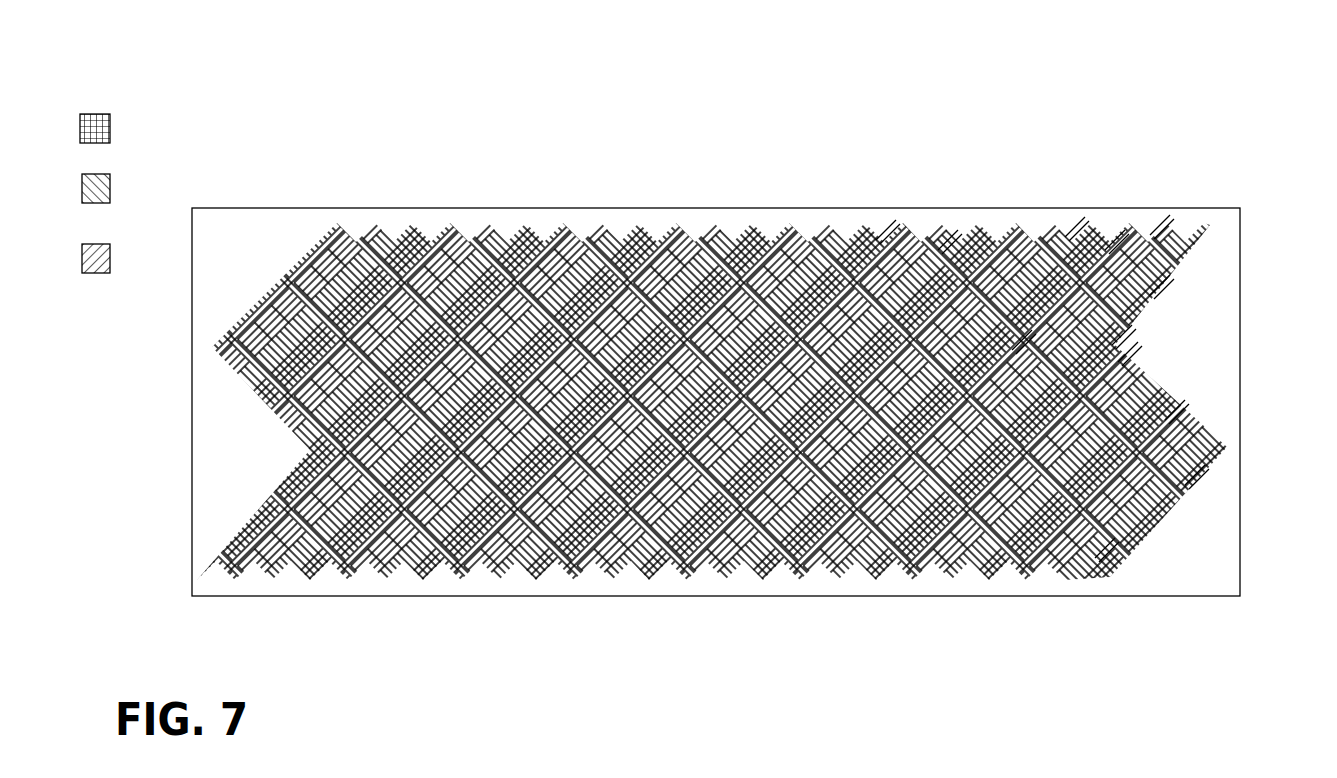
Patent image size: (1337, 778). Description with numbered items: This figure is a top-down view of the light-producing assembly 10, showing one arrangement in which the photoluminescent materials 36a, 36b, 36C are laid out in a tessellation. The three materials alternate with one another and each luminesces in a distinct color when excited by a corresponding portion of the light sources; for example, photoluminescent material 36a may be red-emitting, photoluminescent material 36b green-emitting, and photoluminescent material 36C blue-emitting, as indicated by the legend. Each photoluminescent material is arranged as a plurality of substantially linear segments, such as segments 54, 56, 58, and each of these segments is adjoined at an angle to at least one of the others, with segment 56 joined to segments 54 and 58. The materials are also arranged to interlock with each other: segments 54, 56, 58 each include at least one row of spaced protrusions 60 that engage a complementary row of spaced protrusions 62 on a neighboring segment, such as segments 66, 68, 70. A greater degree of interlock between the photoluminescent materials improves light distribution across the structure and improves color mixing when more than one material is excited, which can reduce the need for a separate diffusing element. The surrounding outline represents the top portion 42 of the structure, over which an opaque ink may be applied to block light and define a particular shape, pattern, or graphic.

The light-producing assembly 10 is at (1147, 110).
The photoluminescent material 36a is at (80, 129).
The photoluminescent material 36b is at (82, 190).
The photoluminescent material 36C is at (82, 260).
The top portion 42 is at (257, 240).
The segment 54 is at (1113, 243).
The segment 56 is at (948, 255).
The segment 58 is at (886, 250).
The spaced protrusions 60 is at (1020, 350).
The spaced protrusions 62 is at (1157, 227).
The segment 66 is at (1157, 290).
The segment 68 is at (1125, 355).
The segment 70 is at (1192, 478).